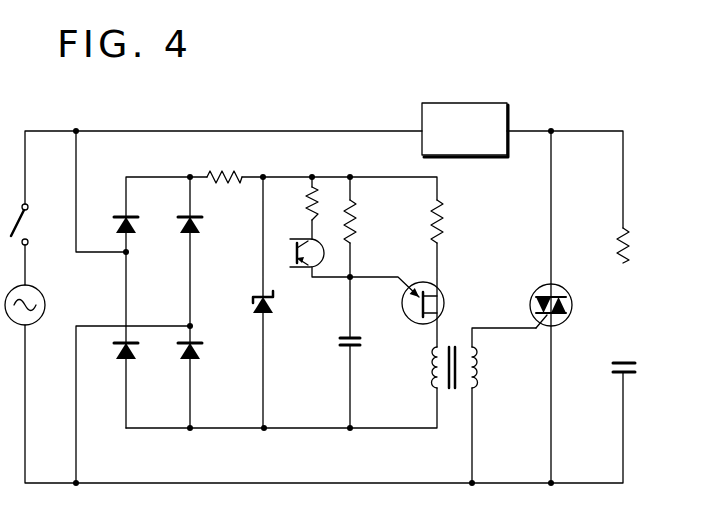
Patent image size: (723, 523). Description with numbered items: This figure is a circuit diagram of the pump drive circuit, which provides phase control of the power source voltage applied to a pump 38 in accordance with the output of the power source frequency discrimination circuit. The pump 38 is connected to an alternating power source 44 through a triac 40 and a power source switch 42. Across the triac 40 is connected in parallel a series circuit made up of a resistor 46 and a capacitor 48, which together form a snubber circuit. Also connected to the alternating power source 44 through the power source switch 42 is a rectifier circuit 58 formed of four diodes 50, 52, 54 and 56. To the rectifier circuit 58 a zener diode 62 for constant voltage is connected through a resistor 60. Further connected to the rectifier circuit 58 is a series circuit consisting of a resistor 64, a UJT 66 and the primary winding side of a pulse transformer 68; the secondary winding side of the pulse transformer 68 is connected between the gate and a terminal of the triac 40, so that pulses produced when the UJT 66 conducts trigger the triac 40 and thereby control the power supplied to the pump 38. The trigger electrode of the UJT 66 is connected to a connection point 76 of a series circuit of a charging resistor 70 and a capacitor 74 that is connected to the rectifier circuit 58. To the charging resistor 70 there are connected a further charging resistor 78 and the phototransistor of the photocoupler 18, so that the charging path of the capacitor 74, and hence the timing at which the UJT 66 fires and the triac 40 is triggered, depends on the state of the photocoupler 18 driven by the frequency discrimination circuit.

The photocoupler 18 is at (291, 246).
The pump 38 is at (459, 103).
The triac 40 is at (558, 284).
The power source switch 42 is at (35, 225).
The alternating power source 44 is at (47, 303).
The resistor 46 is at (630, 243).
The capacitor 48 is at (638, 366).
The diode 50 is at (138, 224).
The diode 52 is at (140, 351).
The diode 54 is at (203, 224).
The diode 56 is at (204, 351).
The rectifier circuit 58 is at (154, 193).
The resistor 60 is at (220, 174).
The zener diode 62 is at (275, 304).
The resistor 64 is at (443, 219).
The UJT 66 is at (445, 300).
The pulse transformer 68 is at (482, 366).
The charging resistor 70 is at (357, 217).
The capacitor 74 is at (362, 340).
The connection point 76 is at (352, 281).
The charging resistor 78 is at (314, 190).